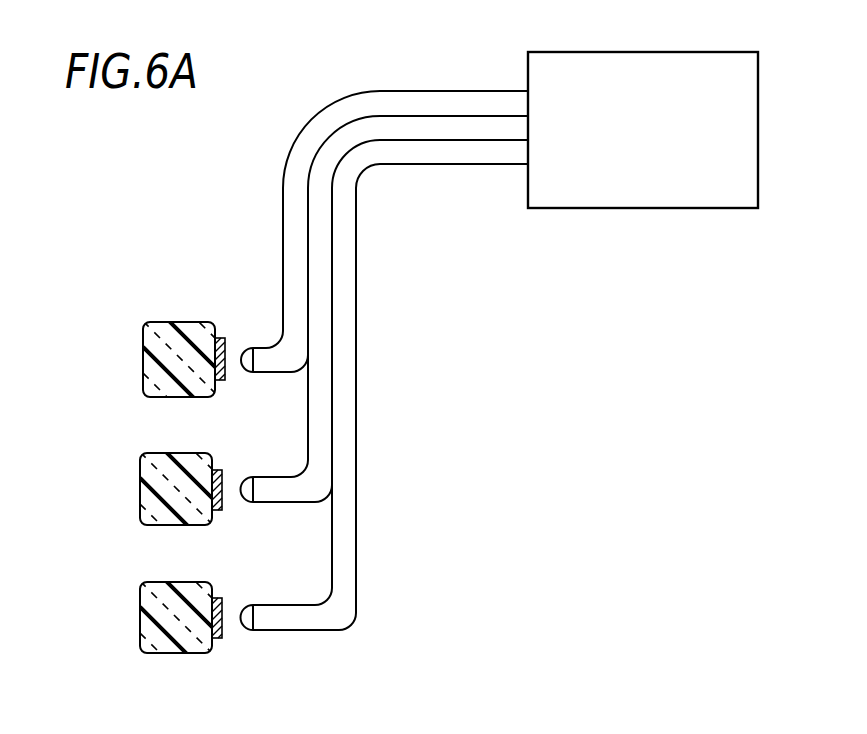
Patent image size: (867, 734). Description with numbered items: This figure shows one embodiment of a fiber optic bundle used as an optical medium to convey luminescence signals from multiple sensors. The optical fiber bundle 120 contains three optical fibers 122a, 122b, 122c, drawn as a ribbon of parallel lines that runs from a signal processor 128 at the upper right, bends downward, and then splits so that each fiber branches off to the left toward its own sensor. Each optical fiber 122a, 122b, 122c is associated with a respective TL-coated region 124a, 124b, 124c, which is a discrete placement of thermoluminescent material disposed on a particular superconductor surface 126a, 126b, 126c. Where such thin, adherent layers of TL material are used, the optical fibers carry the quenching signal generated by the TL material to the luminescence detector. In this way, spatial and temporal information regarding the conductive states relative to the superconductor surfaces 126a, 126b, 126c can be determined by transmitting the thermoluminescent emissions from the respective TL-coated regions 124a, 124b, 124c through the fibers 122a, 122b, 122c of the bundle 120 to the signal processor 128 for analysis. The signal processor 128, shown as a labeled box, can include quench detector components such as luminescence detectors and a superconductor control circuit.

The optical fiber bundle 120 is at (371, 381).
The optical fiber 122a is at (266, 355).
The optical fiber 122b is at (295, 495).
The optical fiber 122c is at (301, 633).
The TL-coated region 124a is at (224, 384).
The TL-coated region 124b is at (221, 505).
The TL-coated region 124c is at (222, 634).
The superconductor surface 126a is at (143, 350).
The superconductor surface 126b is at (140, 481).
The superconductor surface 126c is at (140, 610).
The signal processor 128 is at (635, 52).